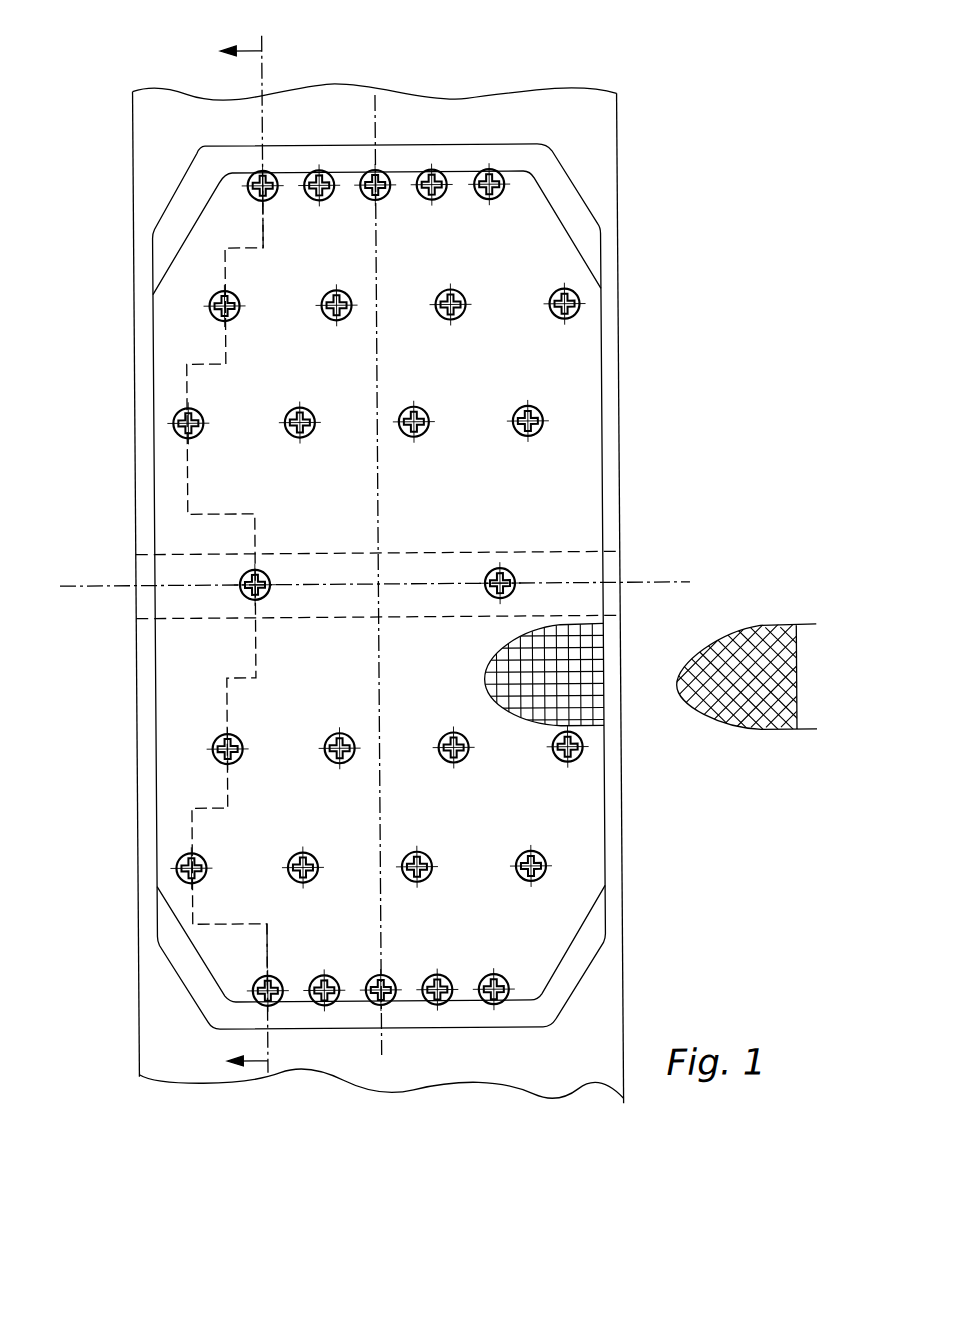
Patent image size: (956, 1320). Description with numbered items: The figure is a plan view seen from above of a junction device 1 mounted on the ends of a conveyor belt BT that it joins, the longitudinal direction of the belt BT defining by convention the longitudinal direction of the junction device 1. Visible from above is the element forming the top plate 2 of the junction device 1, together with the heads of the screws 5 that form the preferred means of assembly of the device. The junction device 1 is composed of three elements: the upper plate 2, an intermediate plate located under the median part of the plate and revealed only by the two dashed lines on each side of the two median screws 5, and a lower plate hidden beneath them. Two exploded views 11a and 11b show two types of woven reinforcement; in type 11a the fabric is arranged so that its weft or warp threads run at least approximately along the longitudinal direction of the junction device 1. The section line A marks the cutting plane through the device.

The junction device 1 is at (470, 157).
The top plate 2 is at (574, 448).
The screws 5 is at (583, 300).
The woven reinforcement (first type) 11a is at (559, 690).
The woven reinforcement (second type) 11b is at (722, 650).
The conveyor belt BT is at (605, 150).
The section line A- A is at (242, 556).